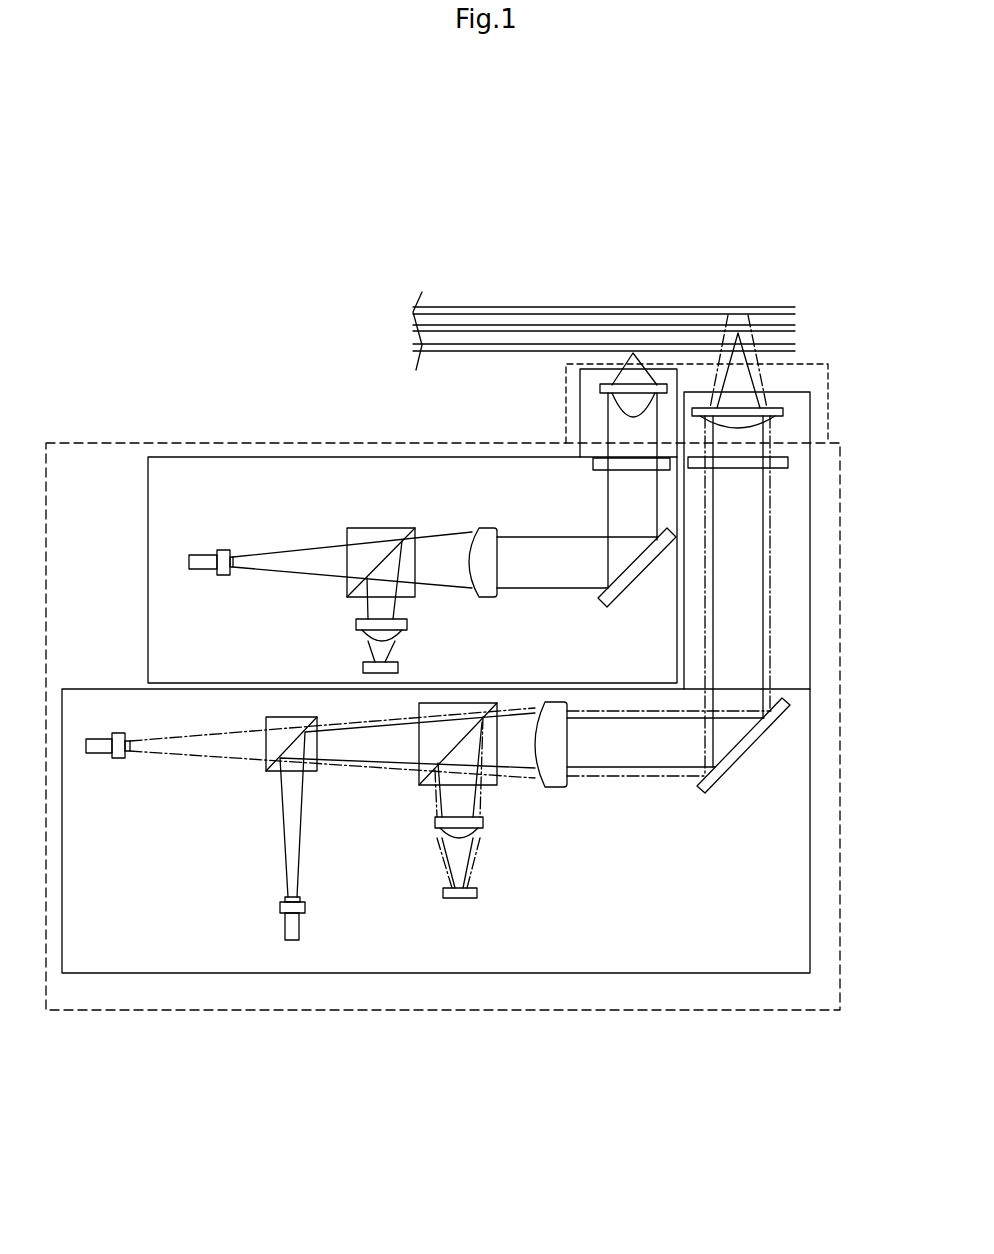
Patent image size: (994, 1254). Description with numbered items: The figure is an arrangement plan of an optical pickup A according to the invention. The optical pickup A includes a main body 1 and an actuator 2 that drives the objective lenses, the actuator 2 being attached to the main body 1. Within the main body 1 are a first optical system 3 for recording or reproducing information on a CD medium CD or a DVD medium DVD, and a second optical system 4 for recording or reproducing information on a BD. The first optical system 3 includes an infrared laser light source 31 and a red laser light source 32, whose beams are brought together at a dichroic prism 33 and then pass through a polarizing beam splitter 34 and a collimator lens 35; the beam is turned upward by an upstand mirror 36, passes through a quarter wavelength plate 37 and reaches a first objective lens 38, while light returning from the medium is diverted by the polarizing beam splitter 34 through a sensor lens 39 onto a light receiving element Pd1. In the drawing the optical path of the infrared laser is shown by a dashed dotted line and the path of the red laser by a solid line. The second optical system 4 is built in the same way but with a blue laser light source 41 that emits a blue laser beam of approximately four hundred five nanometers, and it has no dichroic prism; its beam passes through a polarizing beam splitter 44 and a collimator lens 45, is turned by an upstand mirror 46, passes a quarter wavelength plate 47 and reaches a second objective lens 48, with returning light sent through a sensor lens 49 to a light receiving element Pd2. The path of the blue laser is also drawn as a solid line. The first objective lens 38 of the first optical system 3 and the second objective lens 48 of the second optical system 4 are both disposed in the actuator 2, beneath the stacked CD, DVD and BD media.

The main body 1 is at (97, 442).
The actuator 2 is at (832, 382).
The first optical system 3 is at (228, 973).
The second optical system 4 is at (148, 553).
The infrared laser light source 31 is at (102, 745).
The red laser light source 32 is at (292, 927).
The dichroic prism 33 is at (317, 770).
The polarizing beam splitter 34 is at (495, 785).
The collimator lens 35 is at (557, 778).
The upstand mirror 36 is at (727, 765).
The quarter wavelength plate 37 is at (778, 465).
The first objective lens 38 is at (767, 411).
The sensor lens 39 is at (478, 825).
The blue laser light source 41 is at (209, 565).
The polarizing beam splitter 44 is at (365, 535).
The collimator lens 45 is at (482, 548).
The upstand mirror 46 is at (621, 586).
The quarter wavelength plate 47 is at (598, 474).
The second objective lens 48 is at (610, 400).
The sensor lens 49 is at (390, 628).
The light receiving element Pd1 is at (458, 890).
The light receiving element Pd2 is at (363, 667).
The optical pickup A is at (235, 318).
The CD medium CD is at (572, 312).
The DVD medium DVD is at (473, 330).
The element BD is at (470, 348).